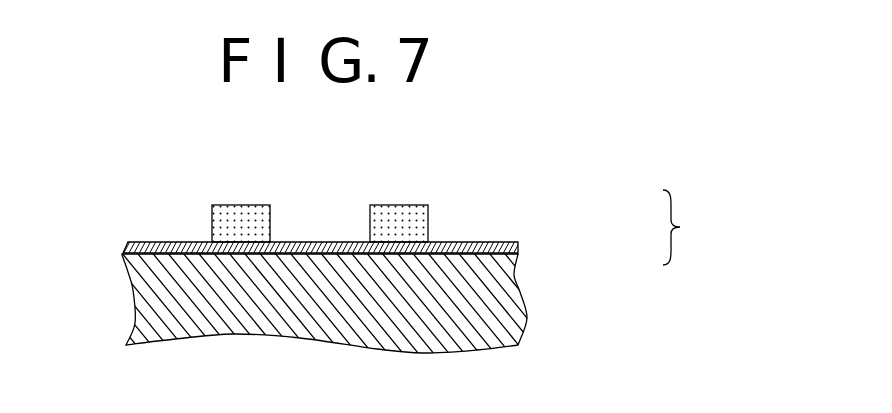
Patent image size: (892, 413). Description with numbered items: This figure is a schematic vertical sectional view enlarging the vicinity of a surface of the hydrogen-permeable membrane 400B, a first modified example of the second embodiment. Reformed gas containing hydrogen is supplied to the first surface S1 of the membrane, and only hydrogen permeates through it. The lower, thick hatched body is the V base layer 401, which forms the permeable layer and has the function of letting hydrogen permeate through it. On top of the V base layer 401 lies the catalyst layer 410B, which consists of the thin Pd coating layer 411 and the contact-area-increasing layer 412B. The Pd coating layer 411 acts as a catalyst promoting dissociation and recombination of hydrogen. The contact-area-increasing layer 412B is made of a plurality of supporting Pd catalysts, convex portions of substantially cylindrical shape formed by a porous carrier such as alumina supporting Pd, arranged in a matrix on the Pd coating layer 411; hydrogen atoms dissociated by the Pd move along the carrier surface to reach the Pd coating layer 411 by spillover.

The hydrogen-permeable membrane 400B is at (478, 168).
The first surface S1 is at (148, 202).
The V base layer 401 is at (520, 290).
The Pd coating layer 411 is at (518, 247).
The contact-area-increasing layer 412B is at (518, 217).
The catalyst layer 410B is at (718, 227).